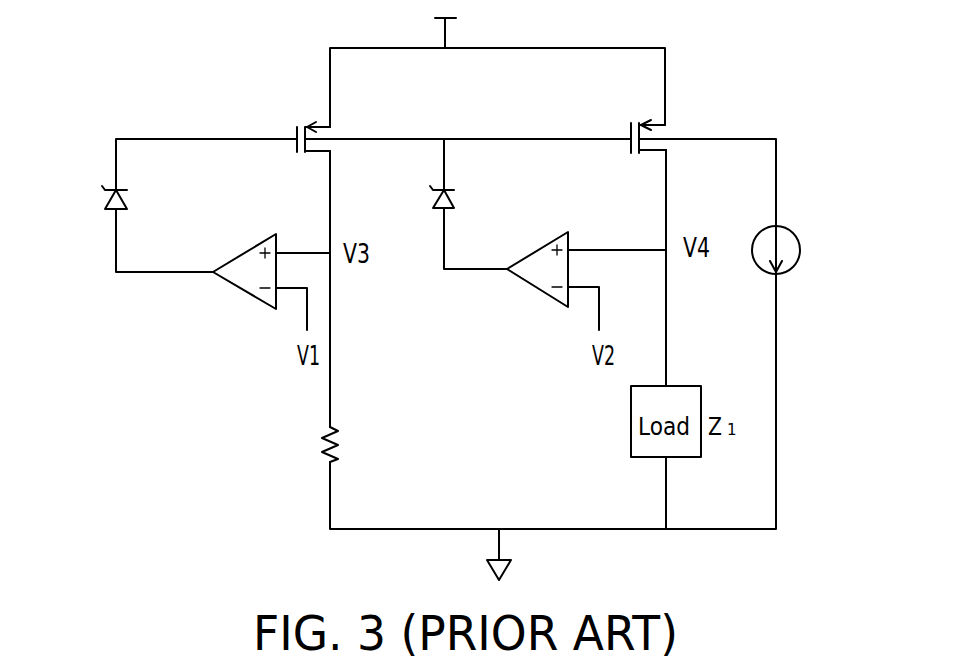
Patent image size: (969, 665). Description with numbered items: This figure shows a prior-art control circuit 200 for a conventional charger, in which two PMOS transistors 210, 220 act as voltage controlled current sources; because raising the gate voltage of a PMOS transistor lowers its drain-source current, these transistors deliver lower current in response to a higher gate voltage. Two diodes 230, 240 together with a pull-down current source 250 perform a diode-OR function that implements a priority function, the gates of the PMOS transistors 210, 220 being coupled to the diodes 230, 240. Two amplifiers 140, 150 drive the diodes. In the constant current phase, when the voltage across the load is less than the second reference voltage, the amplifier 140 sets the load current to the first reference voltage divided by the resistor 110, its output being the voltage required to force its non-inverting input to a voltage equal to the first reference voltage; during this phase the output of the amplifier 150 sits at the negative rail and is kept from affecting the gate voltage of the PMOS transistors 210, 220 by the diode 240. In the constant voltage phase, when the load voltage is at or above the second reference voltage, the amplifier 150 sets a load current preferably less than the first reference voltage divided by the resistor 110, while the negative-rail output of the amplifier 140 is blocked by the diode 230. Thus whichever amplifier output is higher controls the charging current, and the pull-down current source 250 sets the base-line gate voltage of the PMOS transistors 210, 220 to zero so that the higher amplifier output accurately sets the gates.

The voltage regulator circuit (prior art) 200 is at (707, 44).
The PMOS transistor 210 is at (292, 130).
The PMOS transistor 220 is at (629, 130).
The diode 230 is at (100, 199).
The diode 240 is at (430, 198).
The pull-down current source 250 is at (795, 233).
The amplifier 140 is at (243, 253).
The amplifier 150 is at (536, 250).
The resistor 110 is at (340, 432).